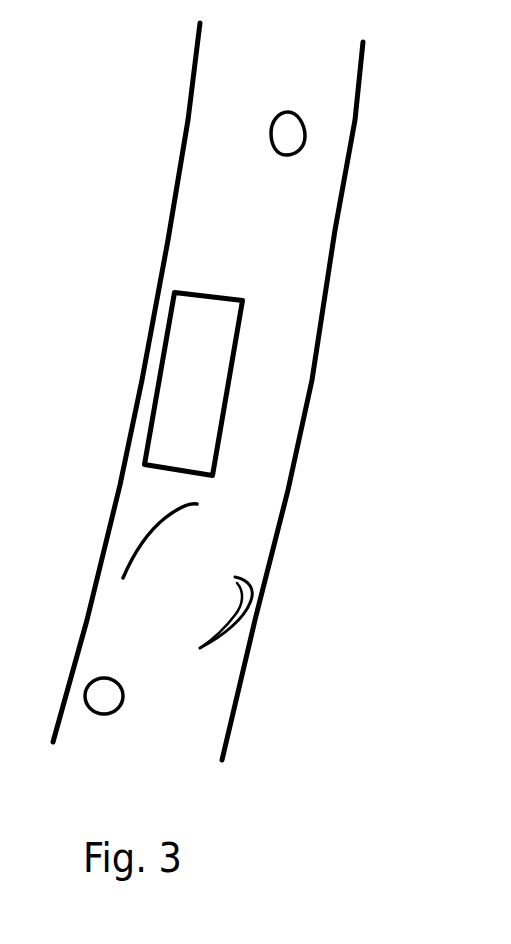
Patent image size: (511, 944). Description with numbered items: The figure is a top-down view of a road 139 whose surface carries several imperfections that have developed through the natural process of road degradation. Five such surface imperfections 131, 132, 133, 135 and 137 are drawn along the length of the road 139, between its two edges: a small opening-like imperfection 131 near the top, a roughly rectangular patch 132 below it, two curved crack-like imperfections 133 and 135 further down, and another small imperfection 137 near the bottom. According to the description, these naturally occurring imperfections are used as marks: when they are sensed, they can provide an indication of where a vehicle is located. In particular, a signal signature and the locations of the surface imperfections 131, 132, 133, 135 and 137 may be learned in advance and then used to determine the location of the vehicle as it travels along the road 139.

The surface imperfection 131 is at (307, 138).
The surface imperfection 132 is at (223, 352).
The surface imperfection 133 is at (188, 513).
The surface imperfection 135 is at (240, 610).
The surface imperfection 137 is at (125, 698).
The road 139 is at (295, 225).